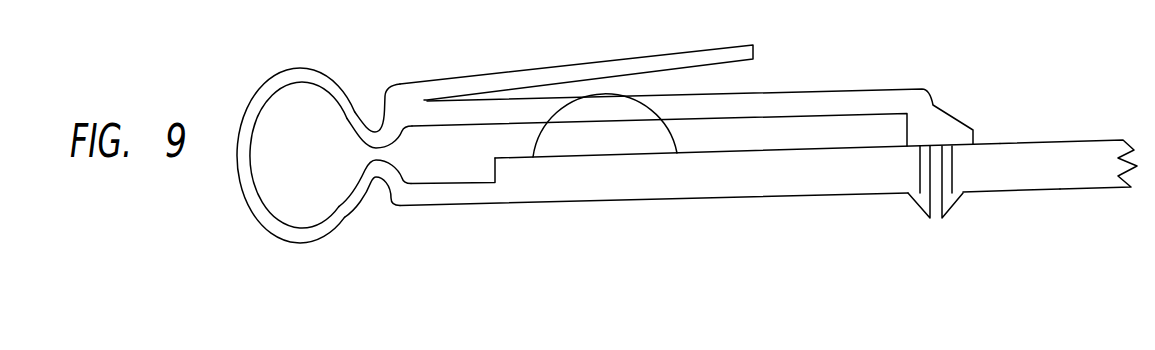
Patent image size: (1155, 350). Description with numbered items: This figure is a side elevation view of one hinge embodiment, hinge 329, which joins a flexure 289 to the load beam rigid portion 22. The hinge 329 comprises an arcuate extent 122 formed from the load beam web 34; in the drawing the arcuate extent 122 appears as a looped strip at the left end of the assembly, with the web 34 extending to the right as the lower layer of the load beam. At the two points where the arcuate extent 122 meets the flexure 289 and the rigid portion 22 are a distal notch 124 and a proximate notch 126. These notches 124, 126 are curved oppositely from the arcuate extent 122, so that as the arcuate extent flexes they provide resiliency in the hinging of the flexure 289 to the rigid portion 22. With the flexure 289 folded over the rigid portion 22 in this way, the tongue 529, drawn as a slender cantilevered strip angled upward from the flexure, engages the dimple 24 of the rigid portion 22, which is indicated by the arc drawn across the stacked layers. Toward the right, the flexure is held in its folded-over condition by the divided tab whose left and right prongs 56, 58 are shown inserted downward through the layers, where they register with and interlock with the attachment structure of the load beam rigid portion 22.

The load beam rigid portion 22 is at (1085, 146).
The rigid portion dimple 24 is at (598, 90).
The load beam web 34 is at (1052, 190).
The left prong 56 is at (920, 162).
The right prong 58 is at (952, 180).
The arcuate extent 122 is at (268, 100).
The distal notch 124 is at (375, 131).
The proximate notch 126 is at (375, 178).
The flexure 289 is at (547, 203).
The hinge 329 is at (240, 216).
The tongue 529 is at (710, 53).